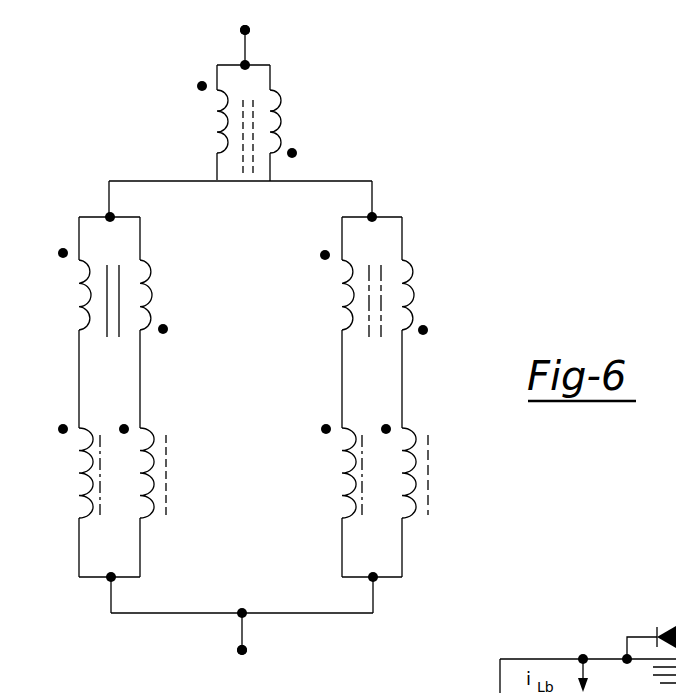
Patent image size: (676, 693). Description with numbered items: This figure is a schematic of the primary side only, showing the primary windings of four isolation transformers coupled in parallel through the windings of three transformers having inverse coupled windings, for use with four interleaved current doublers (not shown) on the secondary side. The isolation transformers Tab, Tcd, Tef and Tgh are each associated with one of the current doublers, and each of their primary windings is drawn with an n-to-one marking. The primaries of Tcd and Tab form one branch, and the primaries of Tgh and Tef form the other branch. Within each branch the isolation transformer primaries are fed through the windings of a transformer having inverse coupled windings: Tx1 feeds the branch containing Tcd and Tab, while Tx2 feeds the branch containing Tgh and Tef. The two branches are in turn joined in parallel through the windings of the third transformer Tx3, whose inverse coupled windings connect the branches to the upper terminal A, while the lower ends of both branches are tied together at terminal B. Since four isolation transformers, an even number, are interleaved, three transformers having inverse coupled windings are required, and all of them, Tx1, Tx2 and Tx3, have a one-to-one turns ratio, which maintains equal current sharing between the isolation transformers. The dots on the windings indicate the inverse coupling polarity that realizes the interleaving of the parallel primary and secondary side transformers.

The transformer having inverse coupled windings Tx1 is at (103, 322).
The transformer having inverse coupled windings Tx2 is at (364, 322).
The transformer having inverse coupled windings Tx3 is at (247, 135).
The isolation transformer Tcd is at (73, 500).
The isolation transformer Tab is at (161, 500).
The isolation transformer Tgh is at (337, 500).
The isolation transformer Tef is at (420, 500).
The terminal A is at (255, 23).
The terminal B is at (255, 659).